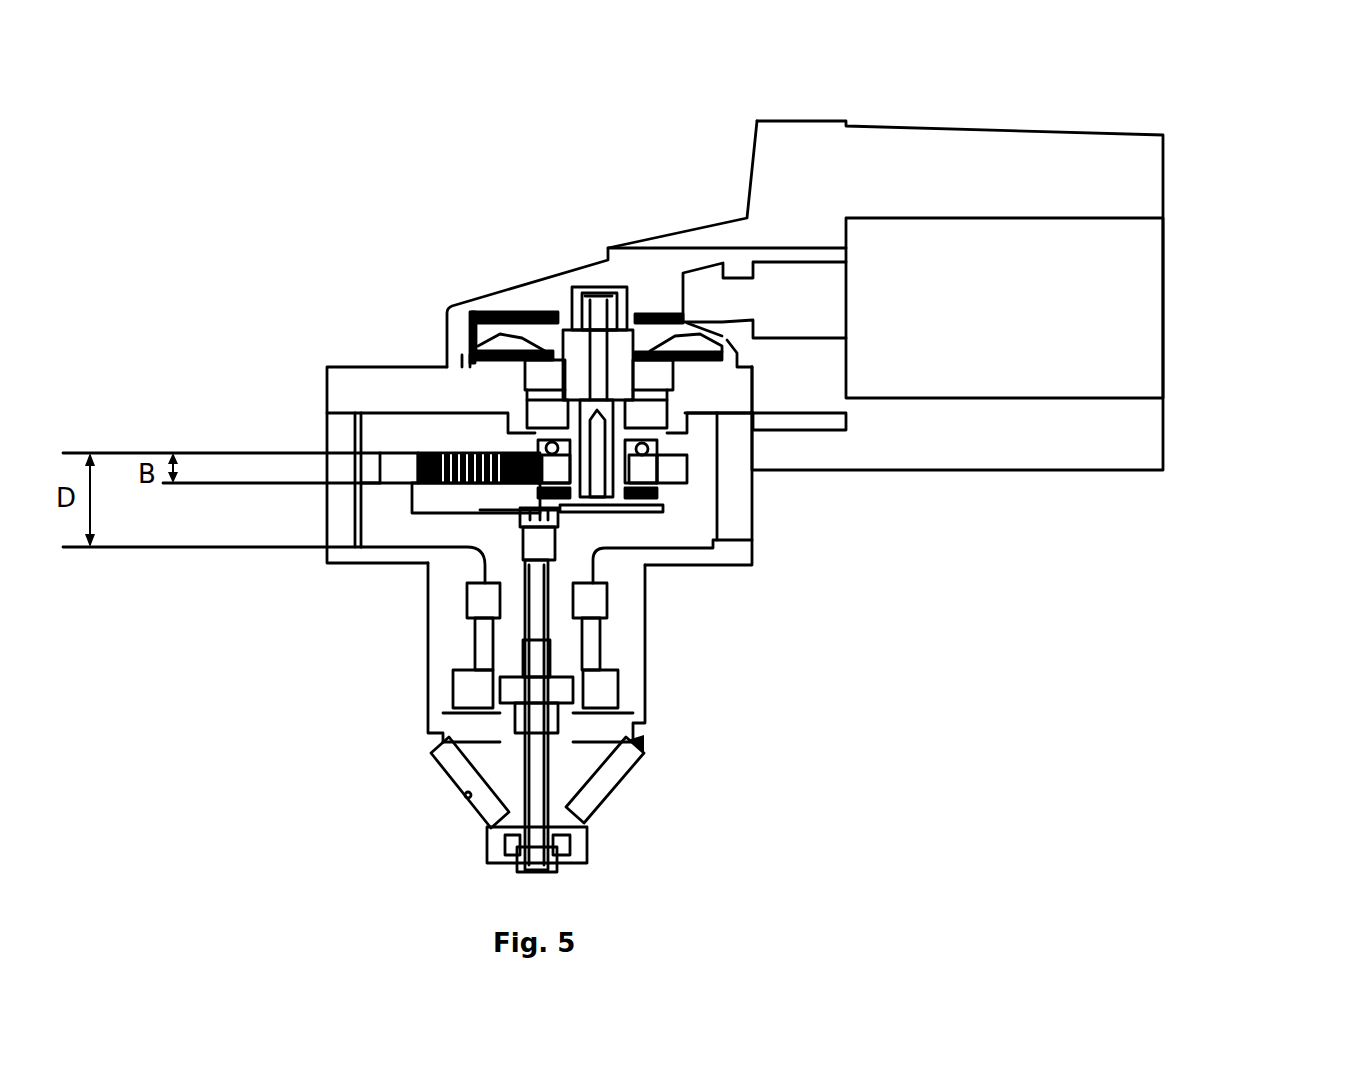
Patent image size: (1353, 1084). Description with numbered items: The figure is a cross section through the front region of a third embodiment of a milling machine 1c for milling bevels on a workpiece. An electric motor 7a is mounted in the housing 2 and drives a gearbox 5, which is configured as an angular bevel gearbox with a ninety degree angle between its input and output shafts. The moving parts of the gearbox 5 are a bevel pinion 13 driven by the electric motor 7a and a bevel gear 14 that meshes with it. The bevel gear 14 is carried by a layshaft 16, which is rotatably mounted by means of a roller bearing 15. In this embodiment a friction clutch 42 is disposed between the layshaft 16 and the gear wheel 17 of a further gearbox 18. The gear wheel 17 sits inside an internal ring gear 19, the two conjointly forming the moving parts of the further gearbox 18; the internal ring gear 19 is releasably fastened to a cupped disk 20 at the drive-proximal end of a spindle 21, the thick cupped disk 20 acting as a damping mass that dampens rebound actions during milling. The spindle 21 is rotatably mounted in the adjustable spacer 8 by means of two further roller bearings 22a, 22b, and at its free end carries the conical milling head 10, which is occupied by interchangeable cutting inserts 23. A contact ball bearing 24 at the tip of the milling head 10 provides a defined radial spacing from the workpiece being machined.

The milling machine 1c is at (1256, 110).
The housing 2 is at (953, 137).
The gearbox 5 is at (557, 236).
The electric motor 7a is at (1150, 331).
The spacer 8 is at (635, 667).
The milling head 10 is at (470, 888).
The bevel pinion 13 is at (706, 283).
The bevel gear 14 is at (472, 313).
The roller bearing 15 is at (545, 404).
The layshaft 16 is at (578, 375).
The gear wheel 17 is at (650, 470).
The further gearbox 18 is at (418, 418).
The internal ring gear 19 is at (400, 465).
The cupped disk 20 is at (410, 528).
The spindle 21 is at (508, 640).
The roller bearing 22a is at (597, 596).
The roller bearing 22b is at (605, 690).
The cutting inserts 23 is at (627, 793).
The contact ball bearing 24 is at (592, 864).
The friction clutch 42 is at (692, 463).